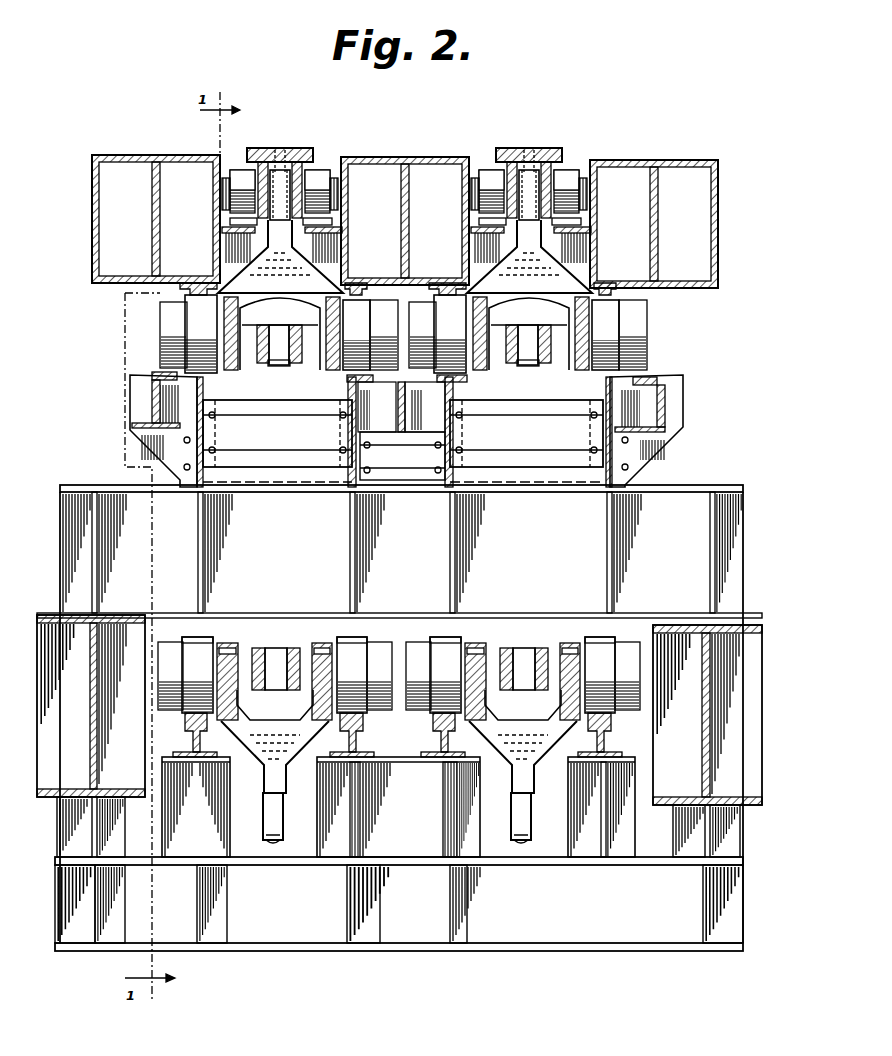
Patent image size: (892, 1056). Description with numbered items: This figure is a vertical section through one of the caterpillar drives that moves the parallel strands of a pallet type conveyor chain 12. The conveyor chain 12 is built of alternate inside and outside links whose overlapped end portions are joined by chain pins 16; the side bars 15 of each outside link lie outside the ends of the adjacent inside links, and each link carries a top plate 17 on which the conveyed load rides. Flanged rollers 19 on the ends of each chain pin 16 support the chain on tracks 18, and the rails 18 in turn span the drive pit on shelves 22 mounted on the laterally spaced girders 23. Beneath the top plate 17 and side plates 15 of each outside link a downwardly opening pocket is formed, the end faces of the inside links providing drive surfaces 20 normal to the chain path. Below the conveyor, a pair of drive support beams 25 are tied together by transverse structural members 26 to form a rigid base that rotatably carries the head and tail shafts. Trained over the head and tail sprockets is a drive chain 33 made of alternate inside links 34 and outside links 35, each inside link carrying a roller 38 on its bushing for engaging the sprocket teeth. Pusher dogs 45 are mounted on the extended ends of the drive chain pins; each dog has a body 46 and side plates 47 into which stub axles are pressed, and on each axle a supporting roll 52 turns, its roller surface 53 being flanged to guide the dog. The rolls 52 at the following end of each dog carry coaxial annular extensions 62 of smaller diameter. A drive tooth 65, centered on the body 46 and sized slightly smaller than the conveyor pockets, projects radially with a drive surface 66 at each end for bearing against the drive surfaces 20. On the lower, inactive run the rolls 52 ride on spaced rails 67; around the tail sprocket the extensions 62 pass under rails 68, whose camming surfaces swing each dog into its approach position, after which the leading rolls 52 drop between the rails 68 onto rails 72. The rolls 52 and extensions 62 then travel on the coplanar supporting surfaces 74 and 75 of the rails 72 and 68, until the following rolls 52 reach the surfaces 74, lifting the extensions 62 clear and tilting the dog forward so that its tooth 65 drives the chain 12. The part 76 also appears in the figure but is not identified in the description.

The conveyor chain 12 is at (305, 150).
The side bars 15 is at (262, 162).
The chain pins 16 is at (336, 178).
The top plate 17 is at (276, 148).
The tracks 18 is at (232, 221).
The flanged rollers 19 is at (238, 170).
The drive surfaces 20 is at (228, 207).
The shelves 22 is at (224, 240).
The girders 23 is at (158, 155).
The drive support beams 25 is at (90, 715).
The transverse structural members 26 is at (680, 490).
The drive chain 33 is at (277, 366).
The inside links 34 is at (258, 365).
The outside links 35 is at (298, 365).
The roller 38 is at (282, 366).
The pusher dog 45 is at (245, 270).
The body 46 is at (298, 260).
The side plates 47 is at (313, 322).
The supporting roll 52 is at (190, 325).
The roller surface 53 is at (195, 307).
The annular extensions 62 is at (170, 343).
The drive tooth 65 is at (283, 170).
The drive surface 66 is at (276, 838).
The rails 67 is at (190, 736).
The rails 68 is at (150, 378).
The rails 72 is at (212, 395).
The supporting surfaces 74 is at (200, 362).
The supporting surfaces 75 is at (158, 368).
The foot bracket 76 is at (186, 283).